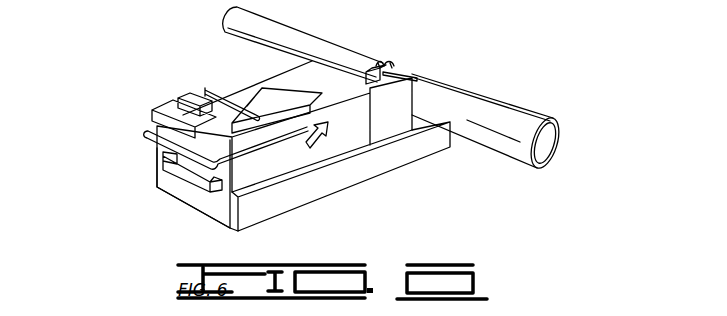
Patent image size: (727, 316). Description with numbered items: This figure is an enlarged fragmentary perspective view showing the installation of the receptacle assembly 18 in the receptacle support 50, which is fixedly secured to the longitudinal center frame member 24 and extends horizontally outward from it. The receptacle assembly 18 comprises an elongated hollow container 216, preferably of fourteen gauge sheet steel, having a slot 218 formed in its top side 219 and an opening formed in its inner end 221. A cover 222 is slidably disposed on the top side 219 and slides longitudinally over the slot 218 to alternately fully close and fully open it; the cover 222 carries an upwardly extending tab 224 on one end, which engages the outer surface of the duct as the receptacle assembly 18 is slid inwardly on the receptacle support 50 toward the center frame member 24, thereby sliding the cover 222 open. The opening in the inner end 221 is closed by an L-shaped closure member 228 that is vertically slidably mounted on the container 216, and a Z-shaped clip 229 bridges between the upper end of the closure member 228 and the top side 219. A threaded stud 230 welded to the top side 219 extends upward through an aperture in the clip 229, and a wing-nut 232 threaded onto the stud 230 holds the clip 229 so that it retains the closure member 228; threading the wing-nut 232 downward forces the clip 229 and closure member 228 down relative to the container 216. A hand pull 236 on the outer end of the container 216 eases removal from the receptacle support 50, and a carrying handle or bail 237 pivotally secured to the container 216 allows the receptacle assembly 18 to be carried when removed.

The receptacle assembly 18 is at (178, 211).
The longitudinal center frame member 24 is at (517, 124).
The receptacle support 50 is at (355, 175).
The elongated hollow container 216 is at (223, 210).
The slot 218 is at (270, 97).
The top side 219 is at (183, 115).
The inner end 221 is at (462, 98).
The cover 222 is at (178, 104).
The upwardly extending tab 224 is at (240, 100).
The L-shaped closure member 228 is at (418, 79).
The Z-shaped clip 229 is at (400, 72).
The threaded stud 230 is at (387, 66).
The wing-nut 232 is at (400, 68).
The hand pull 236 is at (177, 175).
The carrying handle or bail 237 is at (148, 134).